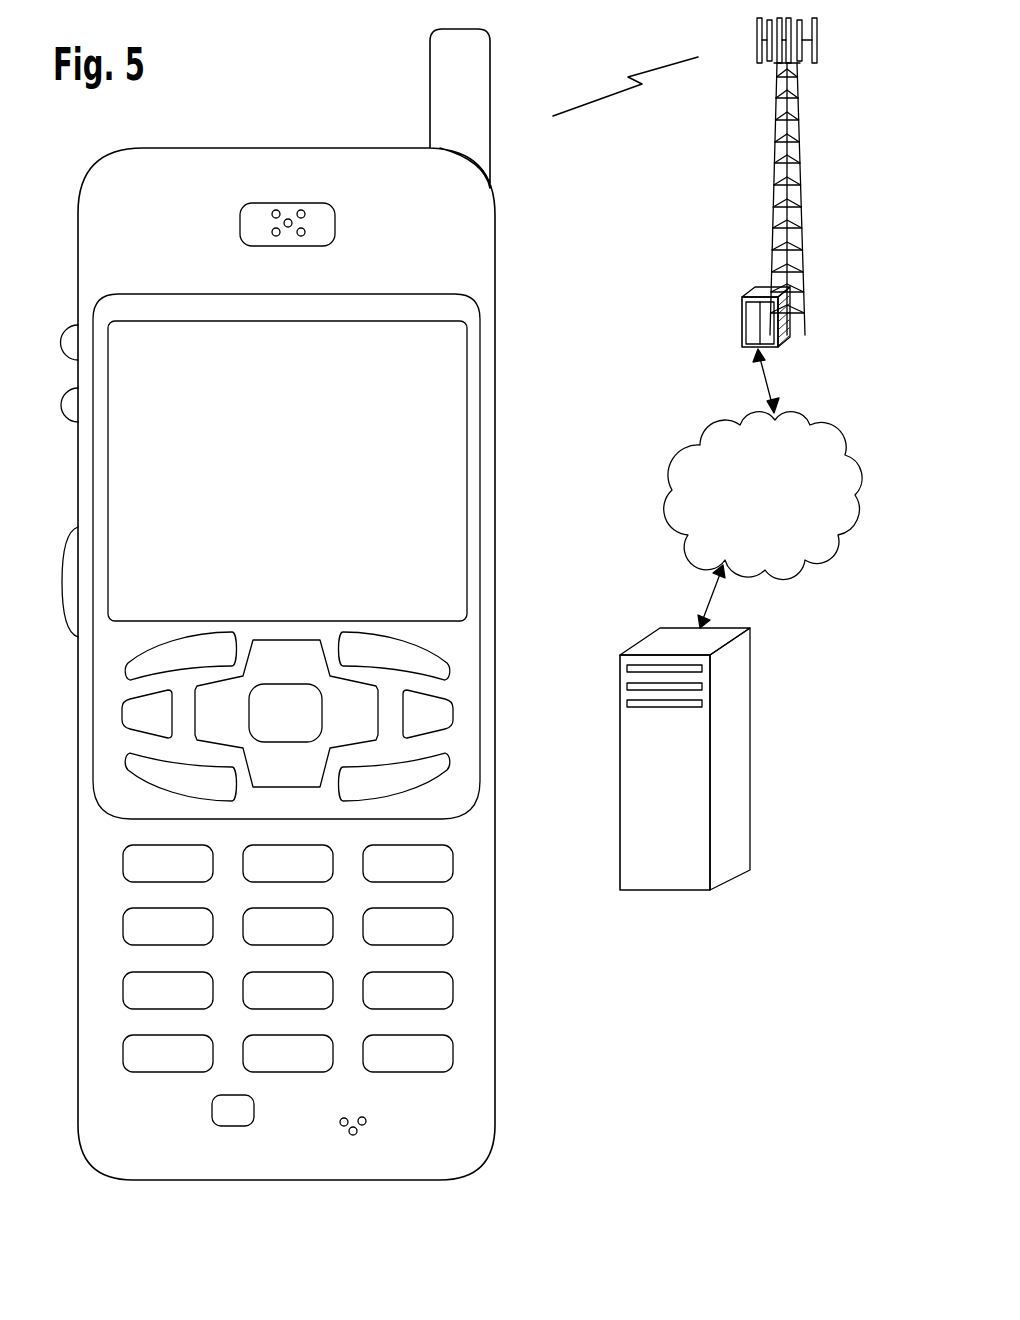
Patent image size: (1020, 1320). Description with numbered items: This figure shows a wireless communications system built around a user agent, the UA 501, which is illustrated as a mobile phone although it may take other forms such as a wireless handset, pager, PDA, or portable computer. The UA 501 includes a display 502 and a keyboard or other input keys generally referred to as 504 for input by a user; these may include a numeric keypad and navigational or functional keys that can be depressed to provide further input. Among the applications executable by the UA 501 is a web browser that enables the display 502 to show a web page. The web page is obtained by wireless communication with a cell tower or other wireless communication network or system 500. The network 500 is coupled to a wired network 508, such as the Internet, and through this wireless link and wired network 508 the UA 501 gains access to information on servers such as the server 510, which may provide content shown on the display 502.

The wireless communication network or system 500 is at (772, 197).
The UA 501 is at (134, 1180).
The display 502 is at (470, 336).
The input keys 504 is at (507, 628).
The wired network 508 is at (683, 542).
The server 510 is at (662, 890).